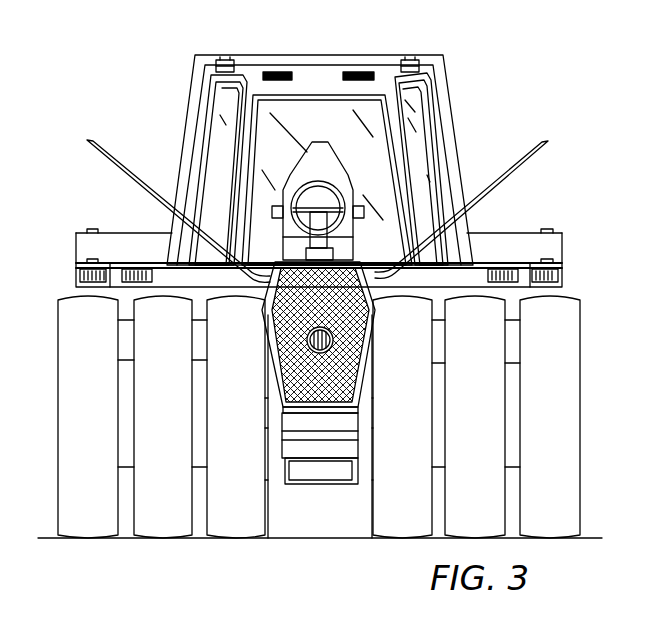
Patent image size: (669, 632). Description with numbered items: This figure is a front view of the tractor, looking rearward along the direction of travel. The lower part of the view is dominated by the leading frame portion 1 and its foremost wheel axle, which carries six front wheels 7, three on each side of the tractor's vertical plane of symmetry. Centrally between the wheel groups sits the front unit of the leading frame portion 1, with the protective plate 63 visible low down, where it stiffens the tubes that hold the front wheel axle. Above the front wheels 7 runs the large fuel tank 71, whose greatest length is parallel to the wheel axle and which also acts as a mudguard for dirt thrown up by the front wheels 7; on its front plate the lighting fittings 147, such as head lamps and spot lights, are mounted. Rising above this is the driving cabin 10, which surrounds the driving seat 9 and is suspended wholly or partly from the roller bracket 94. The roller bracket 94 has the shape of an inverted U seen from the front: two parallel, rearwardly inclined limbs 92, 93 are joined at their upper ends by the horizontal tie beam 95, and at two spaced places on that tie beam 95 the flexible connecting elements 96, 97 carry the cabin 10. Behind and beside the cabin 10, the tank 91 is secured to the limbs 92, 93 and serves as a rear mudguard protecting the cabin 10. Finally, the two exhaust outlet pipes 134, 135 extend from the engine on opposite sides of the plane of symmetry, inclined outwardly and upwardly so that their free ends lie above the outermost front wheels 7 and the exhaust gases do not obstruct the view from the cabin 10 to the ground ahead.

The leading frame portion 1 is at (300, 444).
The front wheels 7 is at (216, 424).
The driving seat 9 is at (312, 148).
The driving cabin 10 is at (420, 128).
The protective plate 63 is at (325, 480).
The fuel tank 71 is at (570, 258).
The tank 91 is at (588, 225).
The limb 92 is at (458, 155).
The limb 93 is at (182, 138).
The roller bracket 94 is at (320, 32).
The tie beam 95 is at (377, 40).
The flexible connecting element 96 is at (410, 60).
The flexible connecting element 97 is at (222, 60).
The outlet pipe 134 is at (547, 147).
The outlet pipe 135 is at (86, 143).
The lighting fittings 147 is at (78, 276).